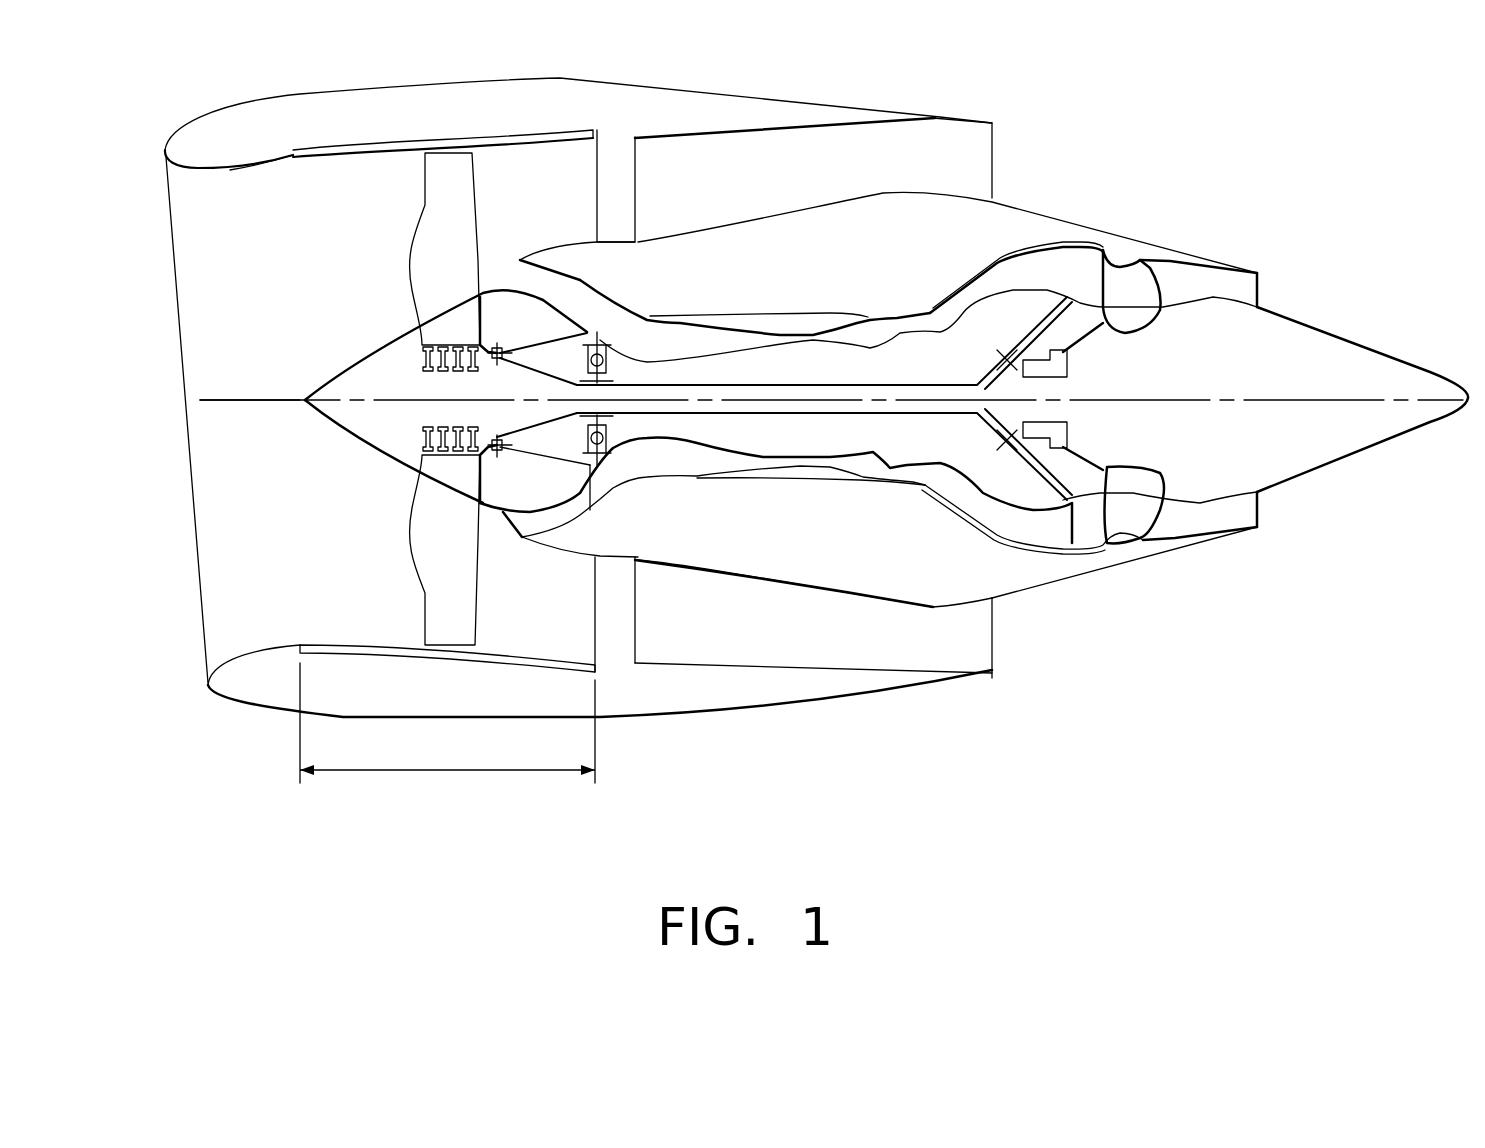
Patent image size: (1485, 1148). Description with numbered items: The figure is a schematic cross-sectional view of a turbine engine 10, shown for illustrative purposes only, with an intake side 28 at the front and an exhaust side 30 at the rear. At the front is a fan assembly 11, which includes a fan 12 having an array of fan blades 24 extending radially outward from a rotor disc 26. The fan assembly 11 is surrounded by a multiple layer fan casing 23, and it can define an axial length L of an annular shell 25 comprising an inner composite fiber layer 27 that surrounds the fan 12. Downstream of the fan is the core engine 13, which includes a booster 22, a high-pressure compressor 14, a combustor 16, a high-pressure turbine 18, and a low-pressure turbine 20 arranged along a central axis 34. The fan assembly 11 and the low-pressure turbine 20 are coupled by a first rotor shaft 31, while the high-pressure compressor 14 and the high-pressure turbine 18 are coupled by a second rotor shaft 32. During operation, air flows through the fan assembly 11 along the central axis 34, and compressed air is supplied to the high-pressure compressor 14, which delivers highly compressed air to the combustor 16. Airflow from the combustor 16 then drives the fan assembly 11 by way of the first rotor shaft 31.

The turbine engine 10 is at (1213, 83).
The fan assembly 11 is at (411, 188).
The fan 12 is at (443, 573).
The core engine 13 is at (830, 235).
The high-pressure compressor 14 is at (692, 333).
The combustor 16 is at (882, 327).
The high-pressure turbine 18 is at (925, 484).
The low-pressure turbine 20 is at (1030, 265).
The booster 22 is at (560, 262).
The multiple layer fan casing 23 is at (848, 108).
The fan blades 24 is at (440, 250).
The annular shell 25 is at (555, 127).
The rotor disc 26 is at (370, 420).
The inner composite fiber layer 27 is at (440, 142).
The intake side 28 is at (243, 298).
The exhaust side 30 is at (1005, 155).
The first rotor shaft 31 is at (760, 385).
The second rotor shaft 32 is at (707, 452).
The central axis 34 is at (1192, 393).
The axial length L is at (440, 772).